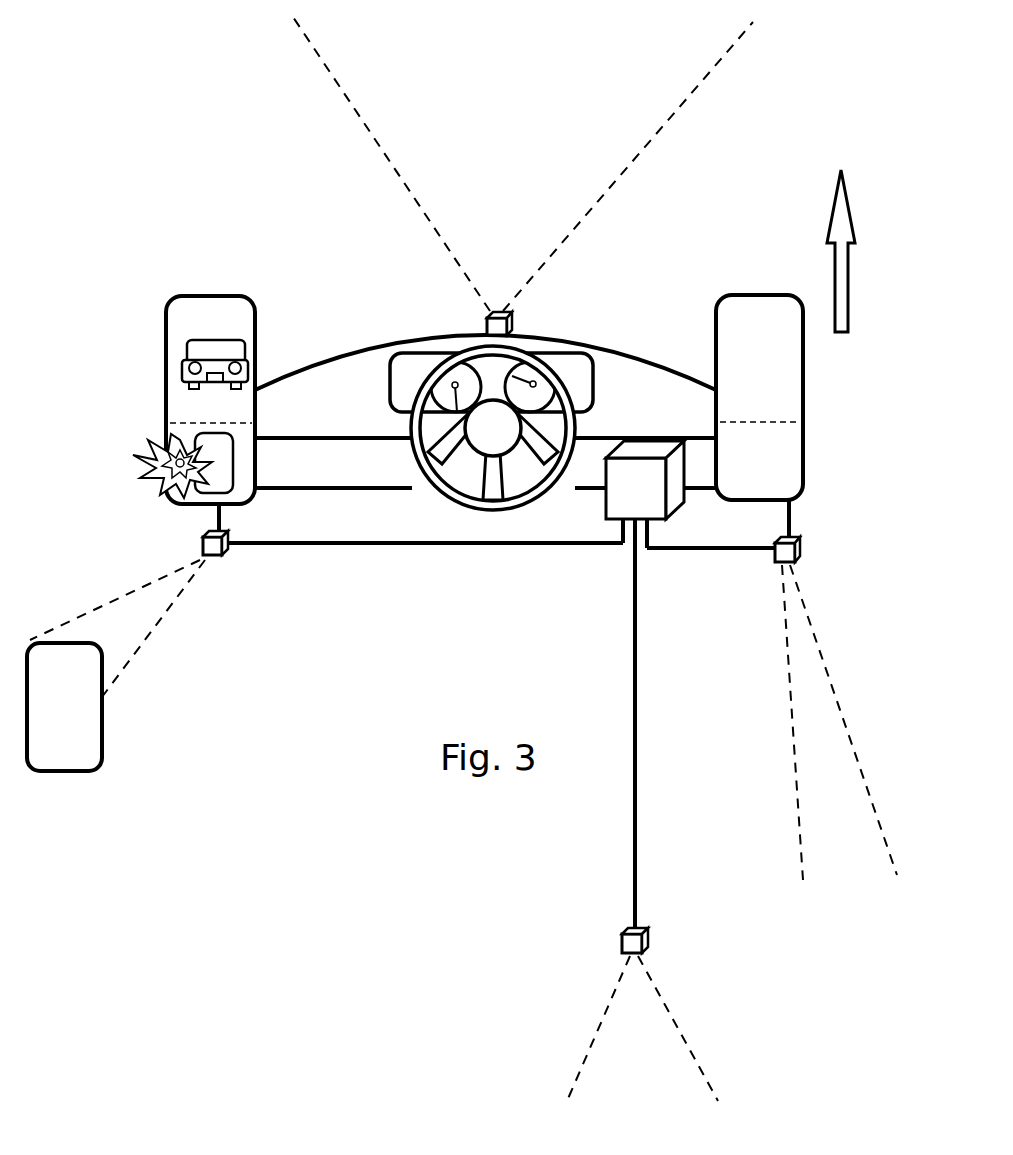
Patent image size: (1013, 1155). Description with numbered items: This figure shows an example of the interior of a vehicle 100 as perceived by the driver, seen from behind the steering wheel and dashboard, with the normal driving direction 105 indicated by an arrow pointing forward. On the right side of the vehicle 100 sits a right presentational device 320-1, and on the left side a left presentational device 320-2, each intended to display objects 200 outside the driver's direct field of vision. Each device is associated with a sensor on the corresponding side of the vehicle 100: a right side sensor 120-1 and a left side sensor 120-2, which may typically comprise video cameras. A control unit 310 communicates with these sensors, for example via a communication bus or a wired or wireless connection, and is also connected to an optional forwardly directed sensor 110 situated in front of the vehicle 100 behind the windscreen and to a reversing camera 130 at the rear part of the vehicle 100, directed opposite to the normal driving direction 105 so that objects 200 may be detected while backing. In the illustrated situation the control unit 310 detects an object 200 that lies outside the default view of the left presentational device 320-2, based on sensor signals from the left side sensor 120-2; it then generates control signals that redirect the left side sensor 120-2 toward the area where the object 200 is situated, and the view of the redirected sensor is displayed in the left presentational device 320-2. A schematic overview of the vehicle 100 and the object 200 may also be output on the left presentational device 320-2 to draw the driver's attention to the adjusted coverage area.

The vehicle 100 is at (318, 387).
The normal driving direction 105 is at (868, 251).
The forwardly directed sensor 110 is at (512, 318).
The right side sensor 120-1 is at (800, 545).
The left side sensor 120-2 is at (203, 541).
The reversing camera 130 is at (648, 935).
The object 200 is at (64, 707).
The control unit 310 is at (501, 684).
The right presentational device 320-1 is at (803, 477).
The left presentational device 320-2 is at (167, 332).